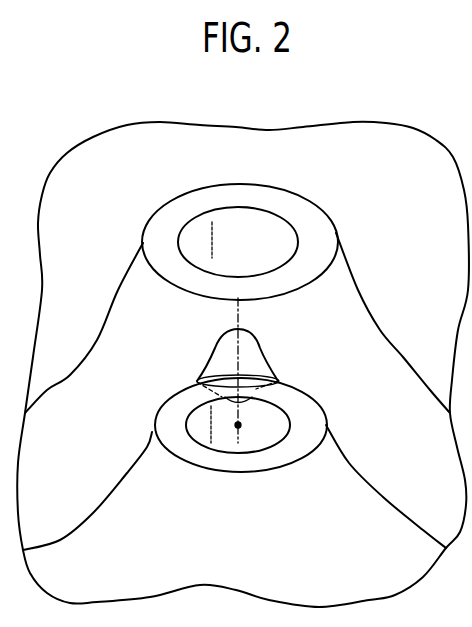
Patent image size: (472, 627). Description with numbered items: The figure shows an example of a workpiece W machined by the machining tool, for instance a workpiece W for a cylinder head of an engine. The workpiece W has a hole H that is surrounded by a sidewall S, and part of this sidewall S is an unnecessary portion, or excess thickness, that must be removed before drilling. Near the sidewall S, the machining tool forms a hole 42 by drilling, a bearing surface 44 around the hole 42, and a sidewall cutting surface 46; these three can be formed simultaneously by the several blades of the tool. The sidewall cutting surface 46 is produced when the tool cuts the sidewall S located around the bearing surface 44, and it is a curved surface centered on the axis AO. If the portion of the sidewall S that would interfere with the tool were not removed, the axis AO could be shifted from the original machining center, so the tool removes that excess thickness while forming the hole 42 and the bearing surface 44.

The workpiece W is at (112, 198).
The sidewall S is at (358, 285).
The hole H is at (255, 225).
The axis AO is at (240, 322).
The sidewall cutting surface 46 is at (222, 355).
The bearing surface 44 is at (220, 472).
The hole 42 is at (271, 450).